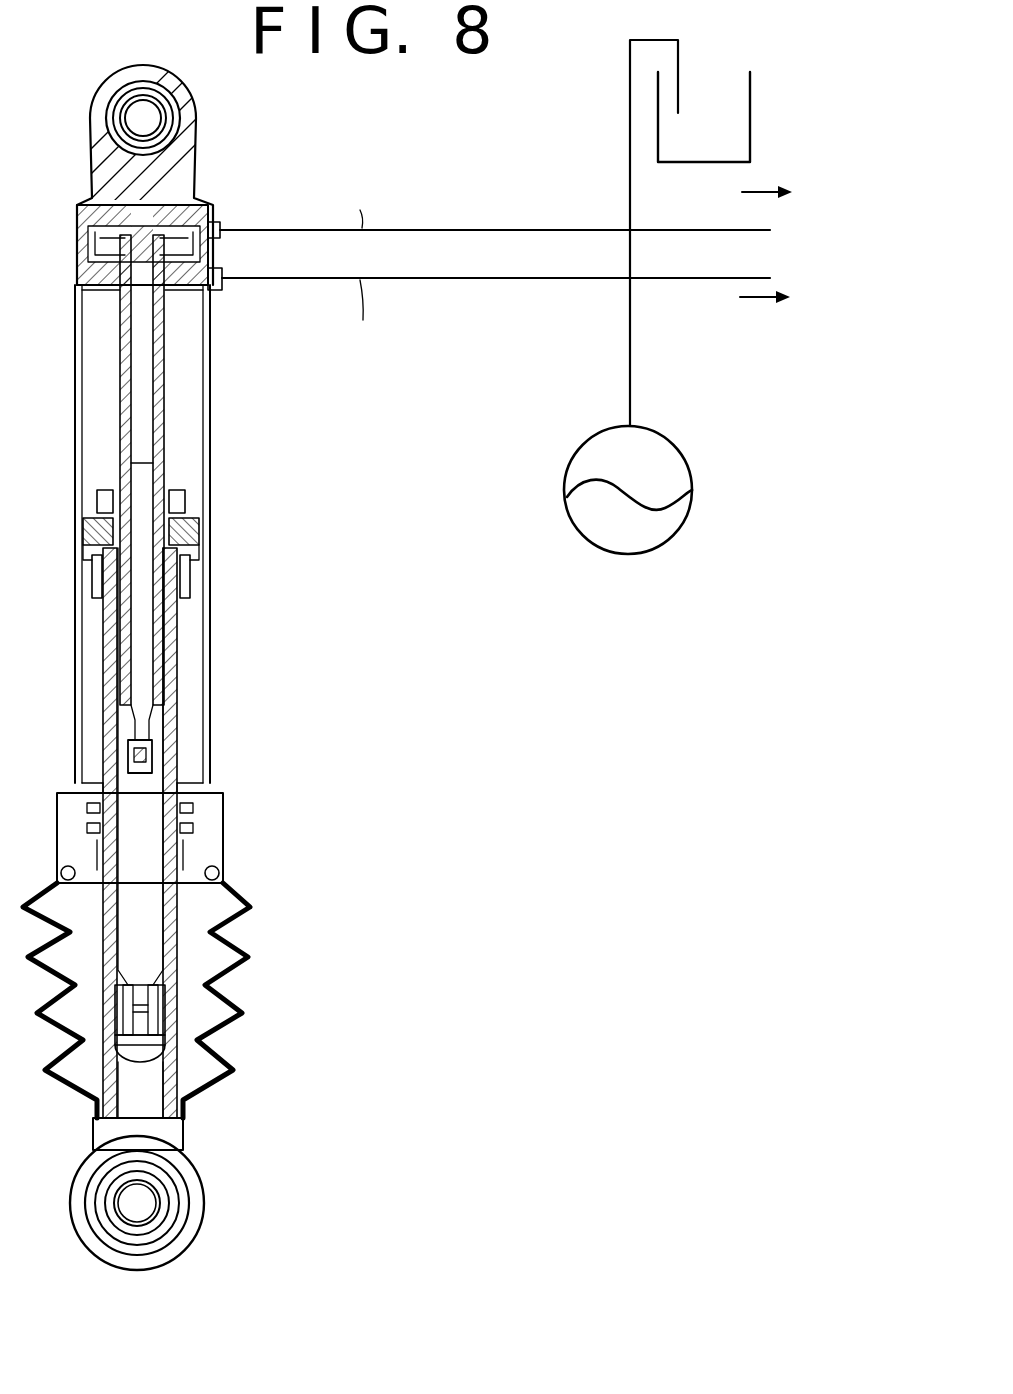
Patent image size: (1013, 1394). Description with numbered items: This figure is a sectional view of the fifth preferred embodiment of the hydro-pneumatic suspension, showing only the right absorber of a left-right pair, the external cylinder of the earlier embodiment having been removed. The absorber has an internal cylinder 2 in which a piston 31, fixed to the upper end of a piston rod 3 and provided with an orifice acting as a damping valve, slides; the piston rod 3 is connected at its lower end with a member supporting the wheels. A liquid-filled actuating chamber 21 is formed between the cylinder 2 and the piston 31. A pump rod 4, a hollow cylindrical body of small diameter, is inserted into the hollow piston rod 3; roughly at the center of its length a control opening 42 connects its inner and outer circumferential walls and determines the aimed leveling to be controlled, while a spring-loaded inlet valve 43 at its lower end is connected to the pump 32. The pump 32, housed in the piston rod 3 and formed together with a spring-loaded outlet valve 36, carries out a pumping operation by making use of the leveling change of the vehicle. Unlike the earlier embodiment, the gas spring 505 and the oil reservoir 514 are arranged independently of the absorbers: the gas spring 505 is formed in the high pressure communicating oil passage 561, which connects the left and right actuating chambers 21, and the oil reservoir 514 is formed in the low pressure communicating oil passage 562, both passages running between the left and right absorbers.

The internal cylinder 2 is at (245, 482).
The actuating chamber 21 is at (190, 423).
The piston rod 3 is at (195, 940).
The piston 31 is at (203, 537).
The pump 32 is at (143, 847).
The outlet valve 36 is at (173, 1052).
The pump rod 4 is at (180, 380).
The control opening 42 is at (133, 463).
The inlet valve 43 is at (153, 763).
The gas spring 505 is at (572, 450).
The oil reservoir 514 is at (752, 140).
The high pressure communicating oil passage 561 is at (497, 283).
The low pressure communicating oil passage 562 is at (469, 228).